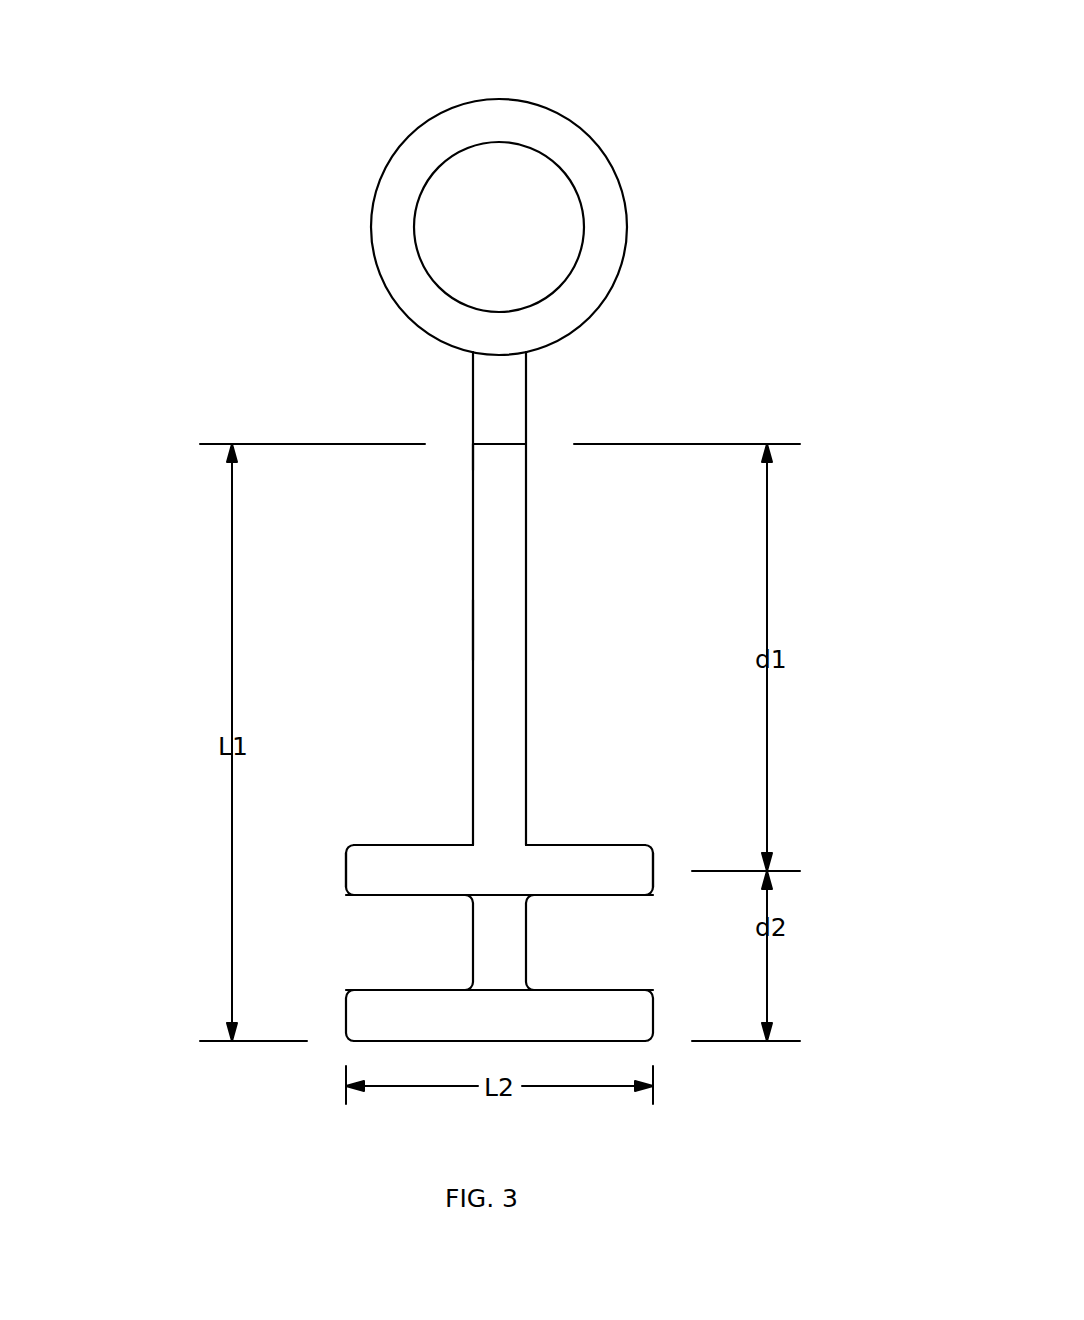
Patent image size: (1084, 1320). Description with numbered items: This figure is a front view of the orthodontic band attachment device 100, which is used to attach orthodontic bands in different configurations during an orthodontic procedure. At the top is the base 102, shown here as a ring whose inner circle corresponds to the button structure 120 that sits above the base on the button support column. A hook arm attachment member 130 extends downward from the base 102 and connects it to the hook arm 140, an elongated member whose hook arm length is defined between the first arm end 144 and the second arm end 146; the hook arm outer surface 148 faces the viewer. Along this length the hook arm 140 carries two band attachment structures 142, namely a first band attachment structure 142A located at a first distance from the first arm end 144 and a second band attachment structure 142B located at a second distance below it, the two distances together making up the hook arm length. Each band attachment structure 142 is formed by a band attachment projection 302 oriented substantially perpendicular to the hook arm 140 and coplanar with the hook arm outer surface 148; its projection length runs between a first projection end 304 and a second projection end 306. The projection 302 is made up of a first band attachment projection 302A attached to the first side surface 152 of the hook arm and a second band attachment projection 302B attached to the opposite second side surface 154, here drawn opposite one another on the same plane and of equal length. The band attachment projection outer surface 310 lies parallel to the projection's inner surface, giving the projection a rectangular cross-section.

The orthodontic band attachment device 100 is at (652, 84).
The base 102 is at (497, 98).
The button structure 120 is at (413, 228).
The hook arm attachment member 130 is at (526, 393).
The hook arm 140 is at (526, 540).
The band attachment structures 142 is at (302, 902).
The first band attachment structure 142A is at (389, 875).
The second band attachment structure 142B is at (391, 1015).
The first arm end 144 is at (474, 450).
The second arm end 146 is at (497, 1041).
The hook arm outer surface 148 is at (492, 628).
The first side surface 152 is at (473, 947).
The second side surface 154 is at (527, 944).
The band attachment projection 302 is at (636, 686).
The first band attachment projection 302A is at (410, 845).
The second band attachment projection 302B is at (588, 845).
The first projection end 304 is at (346, 845).
The second projection end 306 is at (650, 845).
The band attachment projection outer surface 310 is at (630, 883).